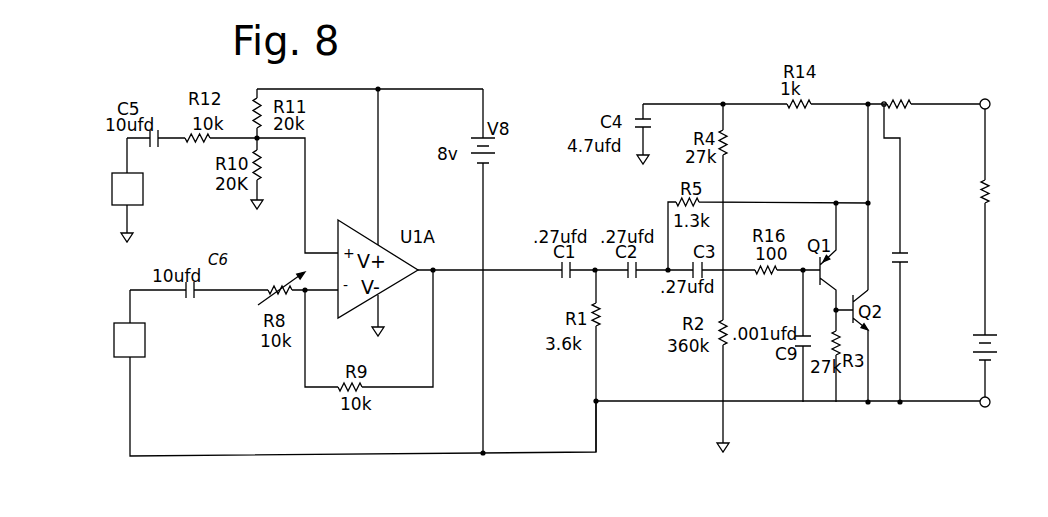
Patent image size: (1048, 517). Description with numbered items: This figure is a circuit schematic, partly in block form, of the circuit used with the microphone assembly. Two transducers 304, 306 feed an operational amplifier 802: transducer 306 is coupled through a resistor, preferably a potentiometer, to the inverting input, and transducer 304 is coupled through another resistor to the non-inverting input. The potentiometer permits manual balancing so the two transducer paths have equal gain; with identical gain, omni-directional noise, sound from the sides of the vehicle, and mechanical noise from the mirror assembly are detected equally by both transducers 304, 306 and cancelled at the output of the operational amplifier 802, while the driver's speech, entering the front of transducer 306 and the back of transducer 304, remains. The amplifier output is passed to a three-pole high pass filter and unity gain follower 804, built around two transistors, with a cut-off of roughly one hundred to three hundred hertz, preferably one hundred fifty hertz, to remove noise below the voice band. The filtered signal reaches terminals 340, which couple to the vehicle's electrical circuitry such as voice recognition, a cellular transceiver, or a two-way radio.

The transducer 304 is at (143, 190).
The transducer 306 is at (145, 340).
The operational amplifier 802 is at (390, 288).
The 3-pole high pass filter and unity gain follower 804 is at (868, 70).
The terminals 340 is at (990, 101).